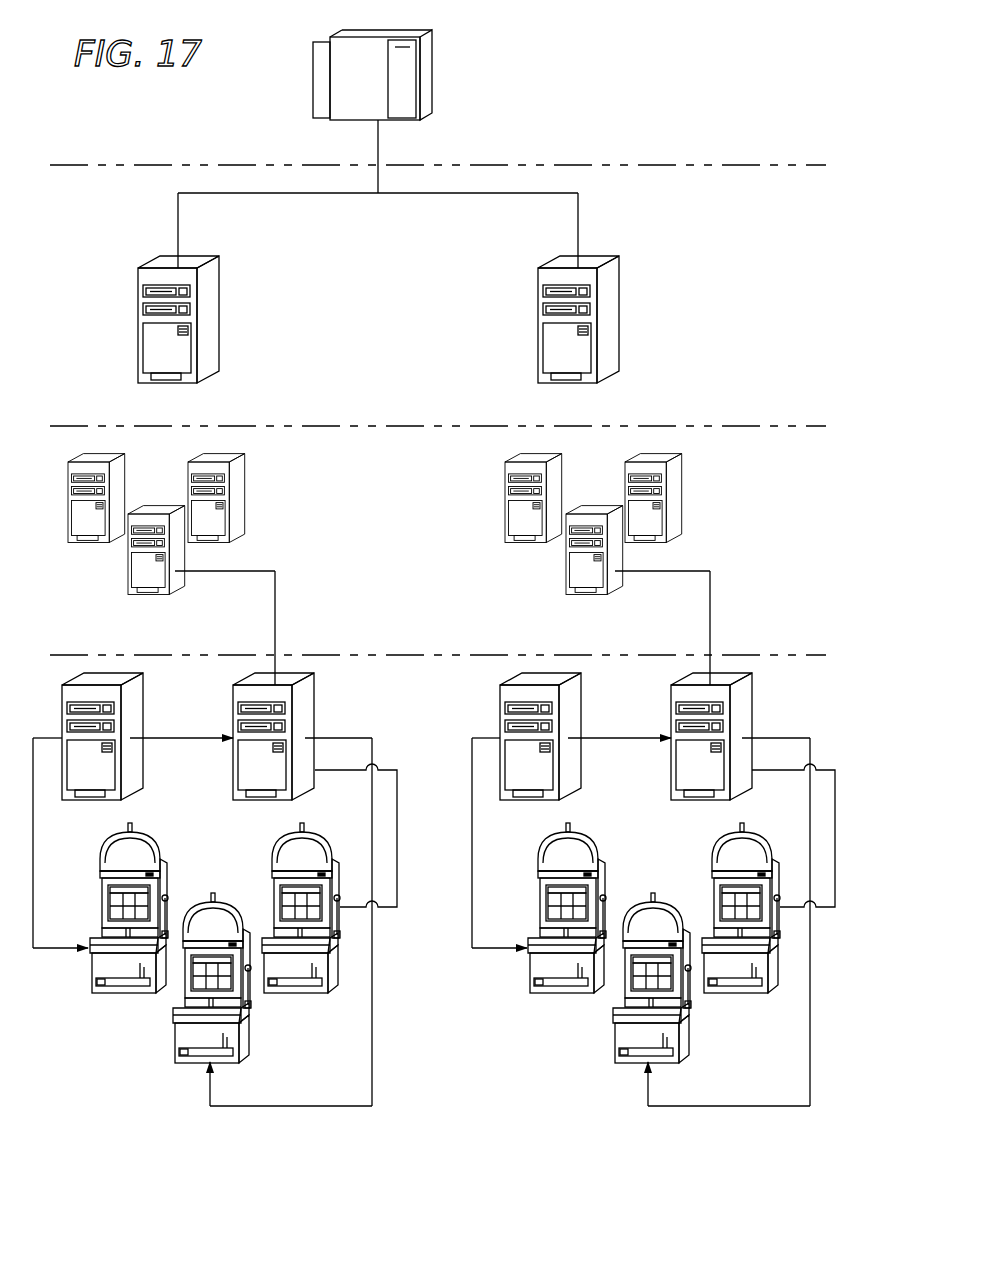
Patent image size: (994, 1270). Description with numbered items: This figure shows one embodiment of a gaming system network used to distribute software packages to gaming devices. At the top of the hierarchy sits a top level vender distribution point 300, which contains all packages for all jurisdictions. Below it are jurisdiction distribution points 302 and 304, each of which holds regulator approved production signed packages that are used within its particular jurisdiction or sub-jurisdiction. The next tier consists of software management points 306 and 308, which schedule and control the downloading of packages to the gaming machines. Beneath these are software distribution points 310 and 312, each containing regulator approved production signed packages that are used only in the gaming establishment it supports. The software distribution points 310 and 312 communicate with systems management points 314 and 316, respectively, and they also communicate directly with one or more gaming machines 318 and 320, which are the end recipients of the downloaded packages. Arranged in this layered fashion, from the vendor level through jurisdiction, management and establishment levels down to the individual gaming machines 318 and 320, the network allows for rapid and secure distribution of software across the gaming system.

The top level vender distribution point 300 is at (395, 35).
The Jurisdiction distribution point 302 is at (138, 325).
The Jurisdiction distribution point 304 is at (538, 325).
The Software Management Point 306 is at (264, 489).
The Software Management Point 308 is at (717, 489).
The Software Distribution Point 310 is at (338, 705).
The Software Distribution Point 312 is at (765, 708).
The Systems Management Point 314 is at (172, 738).
The Systems Management Point 316 is at (610, 738).
The gaming machines 318 is at (210, 1095).
The gaming machines 320 is at (648, 1095).